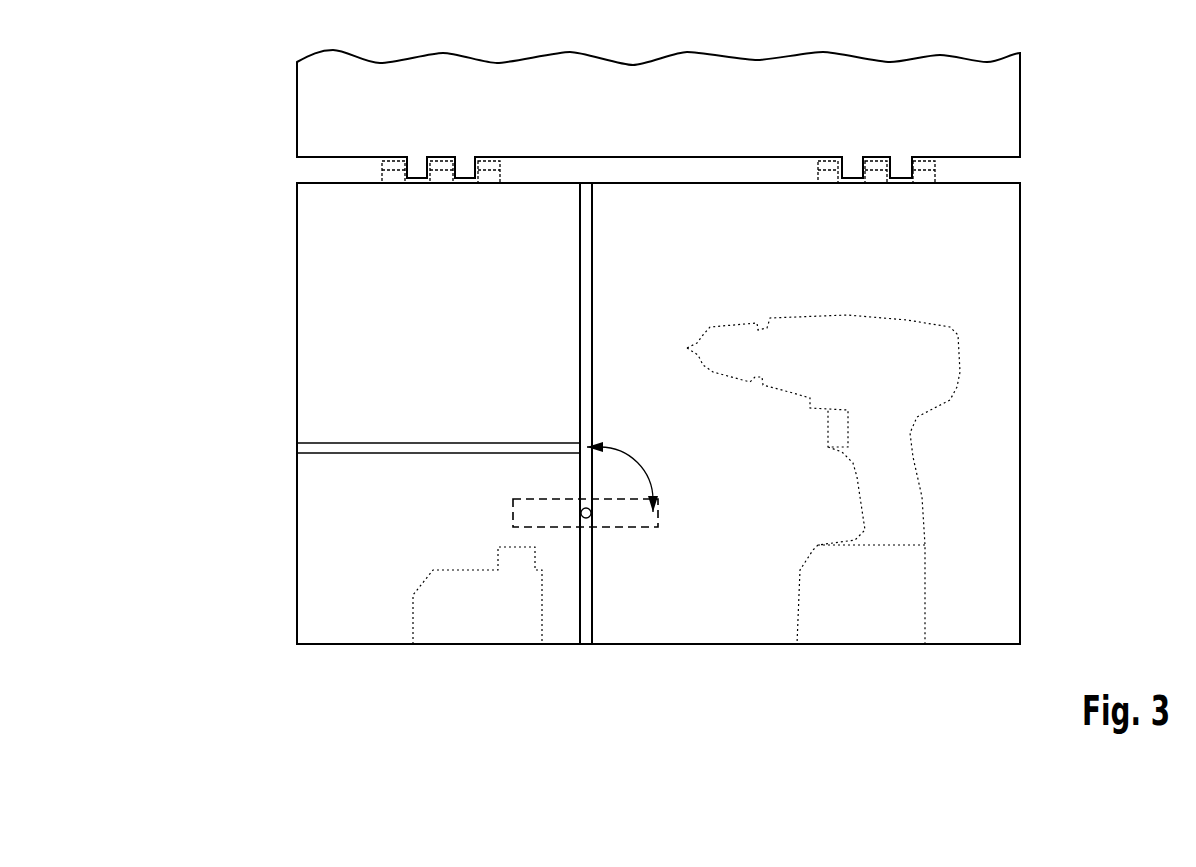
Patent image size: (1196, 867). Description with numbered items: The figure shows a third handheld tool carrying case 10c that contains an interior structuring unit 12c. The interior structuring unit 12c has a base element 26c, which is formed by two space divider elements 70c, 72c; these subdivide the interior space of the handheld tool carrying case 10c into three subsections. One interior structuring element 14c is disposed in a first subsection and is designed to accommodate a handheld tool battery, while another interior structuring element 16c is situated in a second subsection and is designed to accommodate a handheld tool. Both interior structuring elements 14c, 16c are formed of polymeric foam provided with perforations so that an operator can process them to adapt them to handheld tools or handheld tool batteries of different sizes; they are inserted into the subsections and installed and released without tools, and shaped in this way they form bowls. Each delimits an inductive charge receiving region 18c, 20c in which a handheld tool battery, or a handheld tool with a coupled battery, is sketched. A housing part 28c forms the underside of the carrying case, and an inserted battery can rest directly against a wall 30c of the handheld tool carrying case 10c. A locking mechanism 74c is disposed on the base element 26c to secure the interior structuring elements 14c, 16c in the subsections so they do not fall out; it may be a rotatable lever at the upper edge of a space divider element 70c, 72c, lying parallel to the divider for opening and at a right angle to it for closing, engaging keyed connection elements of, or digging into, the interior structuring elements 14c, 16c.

The handheld tool carrying case 10c is at (1022, 215).
The interior structuring unit 12c is at (258, 248).
The interior structuring element 14c is at (338, 607).
The interior structuring element 16c is at (745, 610).
The inductive charge receiving region 18c is at (440, 617).
The inductive charge receiving region 20c is at (915, 580).
The base element 26c is at (258, 306).
The housing part 28c is at (385, 363).
The wall 30c is at (648, 645).
The space divider element 70c is at (582, 195).
The space divider element 72c is at (347, 450).
The locking mechanism 74c is at (548, 528).